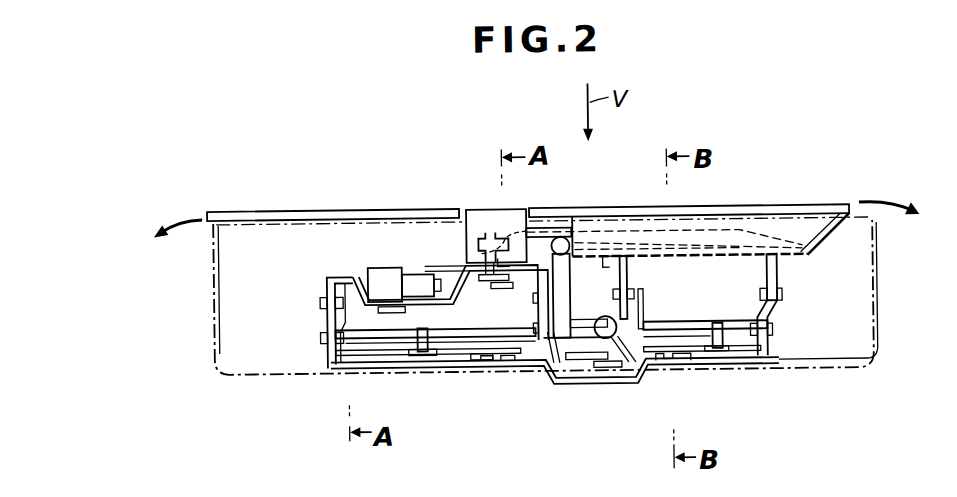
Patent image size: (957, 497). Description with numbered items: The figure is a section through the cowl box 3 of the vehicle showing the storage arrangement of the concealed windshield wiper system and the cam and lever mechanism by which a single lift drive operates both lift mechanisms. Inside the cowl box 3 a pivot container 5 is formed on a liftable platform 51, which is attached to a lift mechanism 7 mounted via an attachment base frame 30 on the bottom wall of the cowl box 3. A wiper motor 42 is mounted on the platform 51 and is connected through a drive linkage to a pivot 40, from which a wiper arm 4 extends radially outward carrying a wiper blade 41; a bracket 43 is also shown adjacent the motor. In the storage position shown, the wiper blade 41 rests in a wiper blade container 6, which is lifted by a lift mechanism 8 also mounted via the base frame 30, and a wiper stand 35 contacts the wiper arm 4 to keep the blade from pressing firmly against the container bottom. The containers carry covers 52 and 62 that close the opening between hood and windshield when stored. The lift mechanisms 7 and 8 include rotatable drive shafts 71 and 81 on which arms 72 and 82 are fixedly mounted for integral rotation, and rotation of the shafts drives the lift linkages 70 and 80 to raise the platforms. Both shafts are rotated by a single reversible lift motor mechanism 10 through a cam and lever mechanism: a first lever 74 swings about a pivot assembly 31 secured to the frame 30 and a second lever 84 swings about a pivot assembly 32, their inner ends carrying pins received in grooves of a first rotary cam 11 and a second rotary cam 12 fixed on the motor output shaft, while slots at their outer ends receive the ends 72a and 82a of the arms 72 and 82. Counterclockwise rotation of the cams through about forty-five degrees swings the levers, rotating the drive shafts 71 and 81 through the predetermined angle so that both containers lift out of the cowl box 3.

The cowl box 3 is at (257, 374).
The wiper arm 4 is at (548, 228).
The pivot container 5 is at (489, 227).
The wiper blade container 6 is at (748, 232).
The lift mechanism 7 is at (408, 300).
The lift mechanism 8 is at (748, 346).
The lift motor mechanism 10 is at (607, 318).
The first rotary cam 11 is at (603, 362).
The second rotary cam 12 is at (568, 362).
The attachment base frame 30 is at (506, 370).
The pivot assembly 31 is at (536, 368).
The pivot assembly 32 is at (656, 358).
The wiper stand 35 is at (566, 240).
The pivot 40 is at (510, 242).
The wiper blade 41 is at (703, 252).
The wiper motor 42 is at (380, 266).
The bracket 43 is at (425, 278).
The liftable platform 51 is at (458, 272).
The cover 52 is at (483, 254).
The cover 62 is at (804, 208).
The cross type lift linkage 70 is at (338, 367).
The drive shaft 71 is at (378, 340).
The arm 72 is at (432, 345).
The one end of arm 72a is at (424, 344).
The first lever 74 is at (484, 362).
The lift linkage 80 is at (764, 358).
The drive shaft 81 is at (738, 338).
The arm 82 is at (716, 338).
The one end of arm 82a is at (714, 350).
The second lever 84 is at (660, 360).